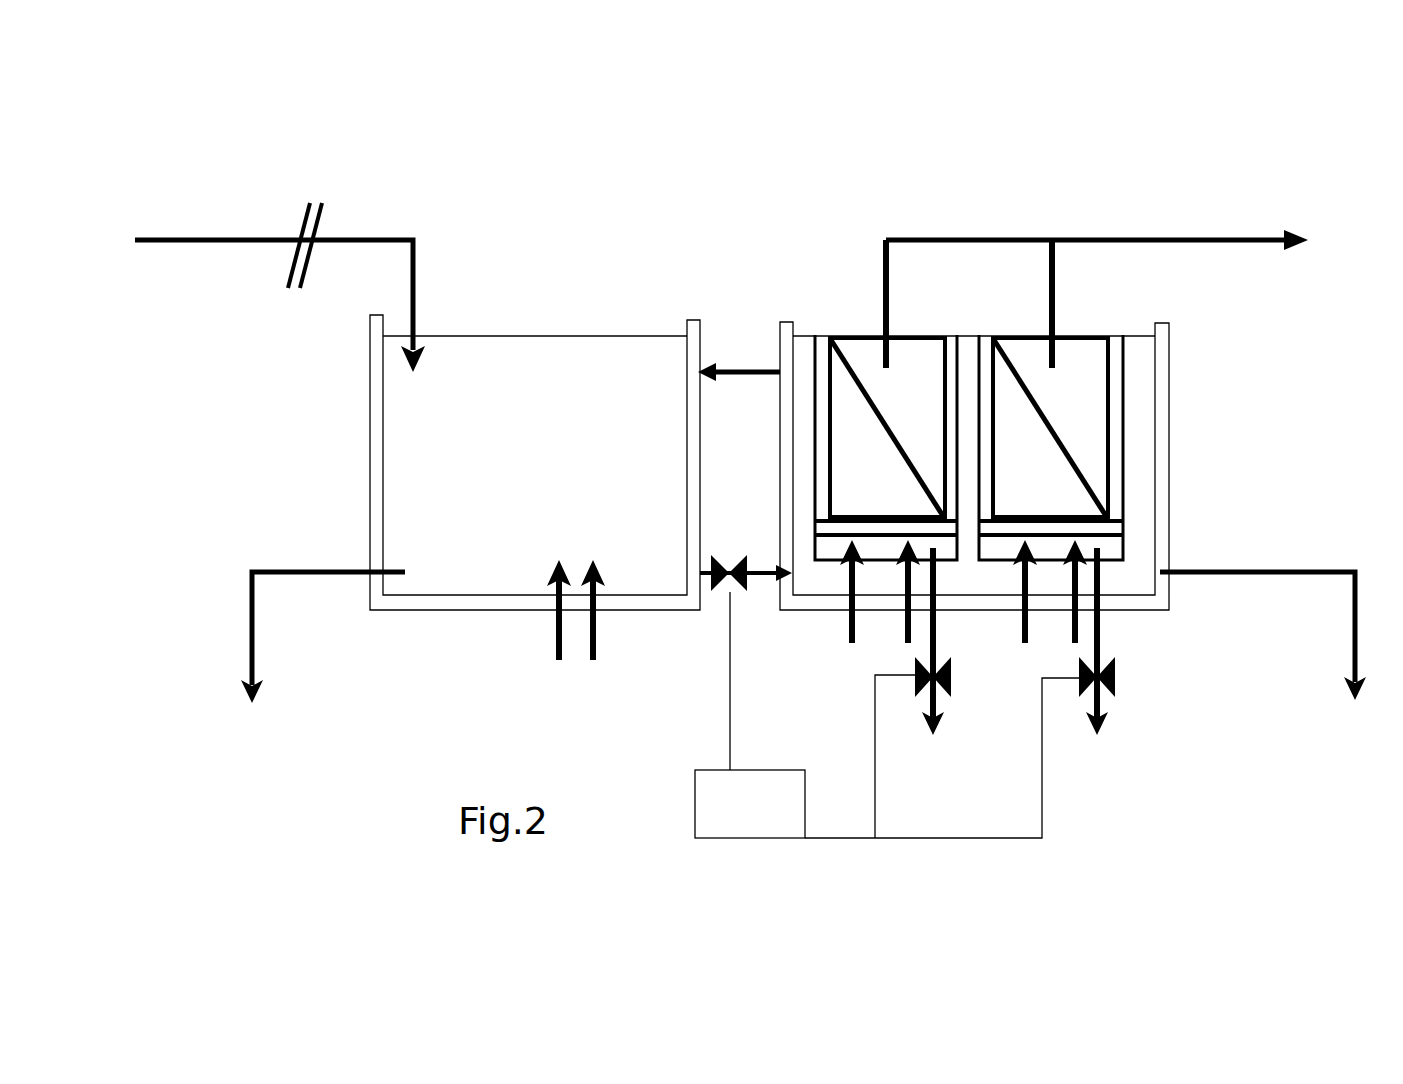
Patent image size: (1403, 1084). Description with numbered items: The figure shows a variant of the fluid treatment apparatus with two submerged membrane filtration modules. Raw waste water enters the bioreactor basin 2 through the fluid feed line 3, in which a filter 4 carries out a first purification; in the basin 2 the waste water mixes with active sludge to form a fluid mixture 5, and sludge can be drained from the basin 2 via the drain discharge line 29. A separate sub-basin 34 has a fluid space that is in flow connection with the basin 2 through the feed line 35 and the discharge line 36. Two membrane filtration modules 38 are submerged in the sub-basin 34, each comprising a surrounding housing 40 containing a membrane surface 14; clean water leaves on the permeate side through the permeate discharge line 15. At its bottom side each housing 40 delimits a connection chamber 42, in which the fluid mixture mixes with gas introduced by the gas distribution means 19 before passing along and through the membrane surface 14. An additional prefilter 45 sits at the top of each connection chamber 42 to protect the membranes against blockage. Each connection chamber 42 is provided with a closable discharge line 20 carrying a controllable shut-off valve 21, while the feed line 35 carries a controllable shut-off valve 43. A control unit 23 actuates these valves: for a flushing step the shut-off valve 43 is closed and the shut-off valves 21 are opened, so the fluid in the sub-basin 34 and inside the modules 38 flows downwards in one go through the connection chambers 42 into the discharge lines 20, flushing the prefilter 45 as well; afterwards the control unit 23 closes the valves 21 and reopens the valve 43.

The basin 2 is at (370, 388).
The fluid feed line 3 is at (183, 247).
The filter 4 is at (325, 212).
The fluid mixture 5 is at (527, 338).
The membrane surface 14 is at (860, 365).
The permeate discharge line 15 is at (1177, 238).
The gas distribution means 19 is at (847, 633).
The discharge line 20 is at (932, 708).
The shut-off valve 21 is at (943, 670).
The control unit 23 is at (776, 813).
The drain discharge line 29 is at (248, 650).
The sub-basin 34 is at (1169, 370).
The feed line 35 is at (760, 582).
The discharge line 36 is at (737, 365).
The membrane filtration module 38 is at (1078, 330).
The housing 40 is at (818, 340).
The connection chamber 42 is at (823, 580).
The shut-off valve 43 is at (725, 553).
The prefilter 45 is at (1077, 515).